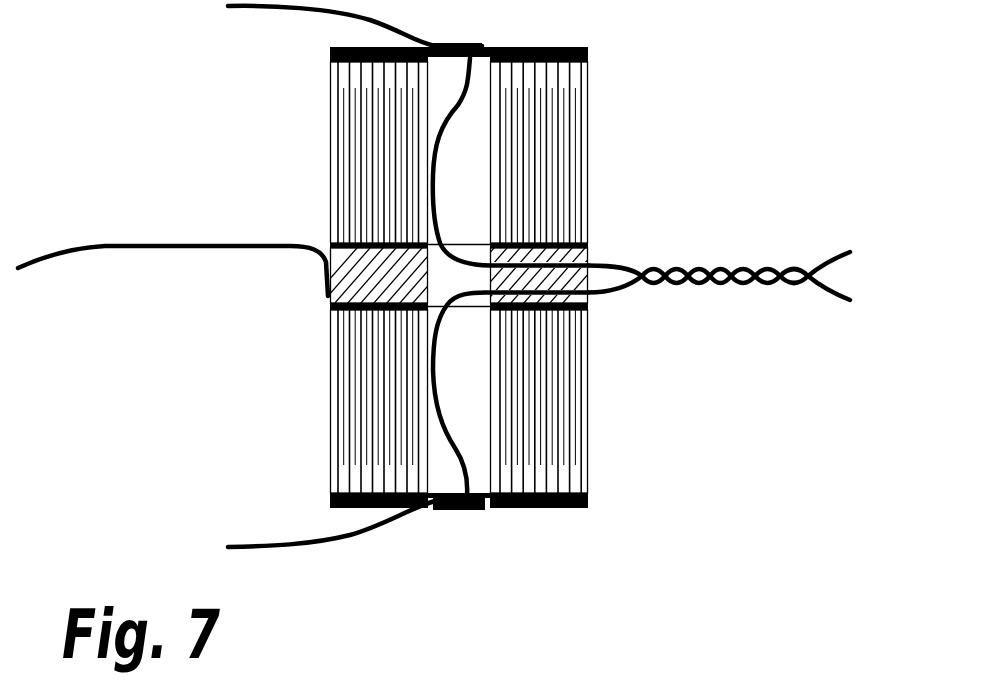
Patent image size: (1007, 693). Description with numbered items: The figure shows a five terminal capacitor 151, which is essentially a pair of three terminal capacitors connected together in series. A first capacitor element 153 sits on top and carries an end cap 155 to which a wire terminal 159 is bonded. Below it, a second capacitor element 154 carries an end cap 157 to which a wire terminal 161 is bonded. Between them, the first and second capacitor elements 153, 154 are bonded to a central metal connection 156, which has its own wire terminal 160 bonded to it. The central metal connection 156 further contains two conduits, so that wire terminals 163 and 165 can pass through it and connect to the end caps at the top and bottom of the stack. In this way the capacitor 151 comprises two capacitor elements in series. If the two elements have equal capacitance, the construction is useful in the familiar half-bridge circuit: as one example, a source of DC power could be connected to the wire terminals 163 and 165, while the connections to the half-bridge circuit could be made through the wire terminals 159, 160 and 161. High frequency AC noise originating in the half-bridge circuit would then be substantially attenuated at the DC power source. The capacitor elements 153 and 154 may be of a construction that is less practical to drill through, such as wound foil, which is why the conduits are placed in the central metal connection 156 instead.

The five terminal capacitor 151 is at (395, 286).
The first capacitor element 153 is at (598, 143).
The second capacitor element 154 is at (600, 403).
The end cap 155 is at (580, 44).
The central metal connection 156 is at (318, 308).
The end cap 157 is at (582, 518).
The wire terminal 159 is at (280, 16).
The wire terminal 160 is at (130, 262).
The wire terminal 161 is at (256, 531).
The wire terminal 163 is at (828, 238).
The wire terminal 165 is at (835, 310).